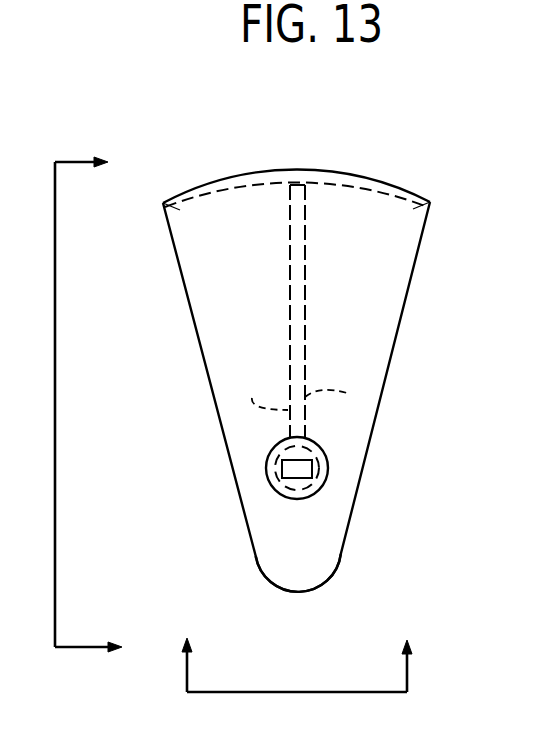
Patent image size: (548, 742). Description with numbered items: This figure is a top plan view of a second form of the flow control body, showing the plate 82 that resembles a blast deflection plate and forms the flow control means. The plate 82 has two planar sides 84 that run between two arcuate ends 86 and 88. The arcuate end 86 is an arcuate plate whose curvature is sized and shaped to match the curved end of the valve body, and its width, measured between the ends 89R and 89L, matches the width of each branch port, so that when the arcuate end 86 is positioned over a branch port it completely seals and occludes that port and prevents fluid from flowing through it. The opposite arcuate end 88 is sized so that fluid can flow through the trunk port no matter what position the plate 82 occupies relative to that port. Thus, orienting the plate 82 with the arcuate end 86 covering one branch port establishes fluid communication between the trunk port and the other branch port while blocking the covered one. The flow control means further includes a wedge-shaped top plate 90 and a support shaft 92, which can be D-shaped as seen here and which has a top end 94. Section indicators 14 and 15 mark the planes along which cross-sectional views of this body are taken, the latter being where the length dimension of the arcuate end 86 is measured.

The plate 82 is at (289, 267).
The planar sides 84 is at (299, 396).
The arcuate end 86 is at (266, 170).
The arcuate end 88 is at (303, 585).
The end 89R is at (176, 207).
The end 89L is at (417, 207).
The wedge-shaped top plate 90 is at (229, 469).
The support shaft 92 is at (327, 448).
The top end 94 is at (287, 478).
The section line 14- 14 is at (88, 421).
The section line 15- 15 is at (297, 665).